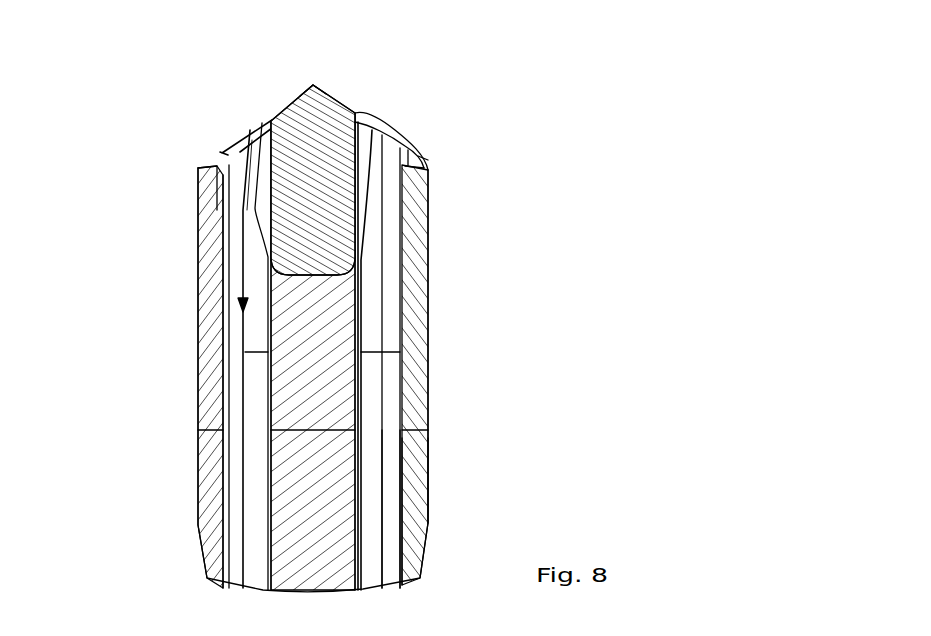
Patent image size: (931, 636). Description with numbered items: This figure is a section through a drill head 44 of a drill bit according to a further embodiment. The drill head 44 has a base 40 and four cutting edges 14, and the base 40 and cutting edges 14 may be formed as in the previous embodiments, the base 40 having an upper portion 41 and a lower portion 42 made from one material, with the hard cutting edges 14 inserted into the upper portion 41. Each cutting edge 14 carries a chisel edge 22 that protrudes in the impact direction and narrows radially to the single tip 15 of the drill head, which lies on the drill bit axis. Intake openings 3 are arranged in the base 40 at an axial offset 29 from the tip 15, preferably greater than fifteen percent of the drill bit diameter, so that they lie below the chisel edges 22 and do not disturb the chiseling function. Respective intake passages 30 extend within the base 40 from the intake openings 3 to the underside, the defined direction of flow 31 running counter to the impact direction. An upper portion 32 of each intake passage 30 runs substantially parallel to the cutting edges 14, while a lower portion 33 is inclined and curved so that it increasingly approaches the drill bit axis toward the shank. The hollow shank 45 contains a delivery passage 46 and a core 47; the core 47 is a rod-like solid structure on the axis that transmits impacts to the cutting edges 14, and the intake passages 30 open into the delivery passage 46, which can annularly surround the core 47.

The drill head 44 is at (118, 93).
The intake openings 3 is at (233, 153).
The tip 15 is at (313, 85).
The chisel edge 22 is at (363, 110).
The axial offset 29 is at (447, 82).
The cutting edges 14 is at (347, 210).
The upper portion 41 is at (420, 222).
The lower portion 42 is at (420, 278).
The base 40 is at (505, 207).
The direction of flow 31 is at (243, 270).
The upper portion 32 is at (228, 176).
The lower portion 33 is at (243, 384).
The intake passage 30 is at (118, 255).
The core 47 is at (317, 448).
The delivery passage 46 is at (387, 500).
The hollow shank 45 is at (460, 438).